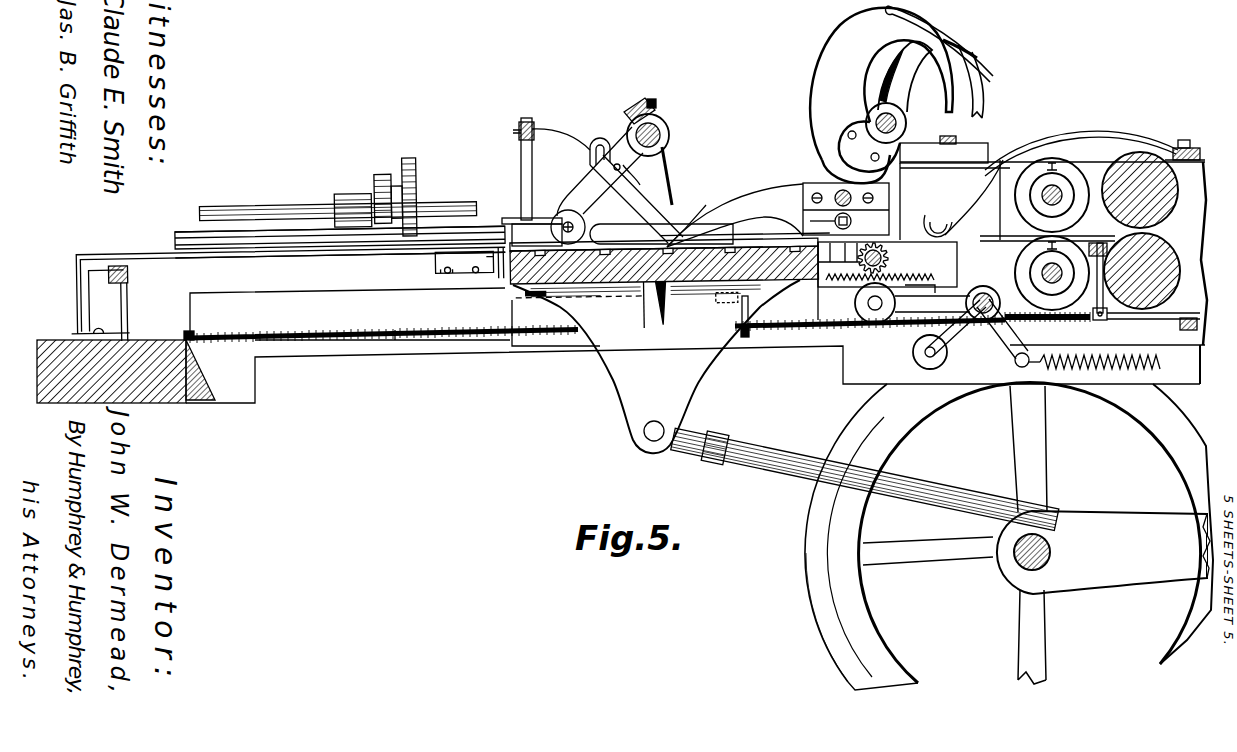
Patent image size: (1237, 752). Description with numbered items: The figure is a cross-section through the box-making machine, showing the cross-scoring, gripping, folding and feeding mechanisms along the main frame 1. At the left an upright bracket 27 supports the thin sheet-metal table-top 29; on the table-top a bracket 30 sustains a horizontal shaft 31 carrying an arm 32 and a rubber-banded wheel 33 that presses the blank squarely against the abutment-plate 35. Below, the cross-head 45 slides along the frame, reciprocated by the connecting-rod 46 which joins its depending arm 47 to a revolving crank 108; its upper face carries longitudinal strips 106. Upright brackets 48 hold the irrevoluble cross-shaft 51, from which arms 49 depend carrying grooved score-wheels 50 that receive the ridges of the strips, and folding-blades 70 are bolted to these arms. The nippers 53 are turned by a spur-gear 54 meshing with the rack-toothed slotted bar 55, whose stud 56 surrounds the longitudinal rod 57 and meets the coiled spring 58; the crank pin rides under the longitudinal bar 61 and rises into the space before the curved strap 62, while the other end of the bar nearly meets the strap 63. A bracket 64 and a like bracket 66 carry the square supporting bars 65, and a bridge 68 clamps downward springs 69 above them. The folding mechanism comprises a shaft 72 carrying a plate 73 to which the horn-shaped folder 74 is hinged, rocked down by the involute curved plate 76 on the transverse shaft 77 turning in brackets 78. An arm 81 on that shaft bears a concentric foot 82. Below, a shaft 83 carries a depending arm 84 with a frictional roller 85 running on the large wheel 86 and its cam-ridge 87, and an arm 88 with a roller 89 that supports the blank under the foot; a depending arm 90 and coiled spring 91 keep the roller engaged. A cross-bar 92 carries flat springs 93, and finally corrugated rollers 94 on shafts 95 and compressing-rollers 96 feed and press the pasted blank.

The main frame 1 is at (621, 345).
The upright bracket 27 is at (420, 276).
The table-top 29 is at (175, 250).
The bracket 30 is at (353, 202).
The horizontal shaft 31 is at (338, 202).
The arm 32 is at (380, 185).
The wheel 33 is at (413, 162).
The abutment-plate 35 is at (176, 232).
The cross-head 45 is at (508, 290).
The connecting-rod 46 is at (865, 479).
The depending arm 47 is at (656, 366).
The upright bracket 48 is at (672, 176).
The arm 49 is at (666, 123).
The score-wheel 50 is at (558, 213).
The cross-shaft 51 is at (663, 135).
The nippers 53 is at (889, 259).
The spur-gear 54 is at (887, 281).
The bar 55 is at (920, 285).
The stud 56 is at (748, 316).
The longitudinal rod 57 is at (395, 332).
The coiled spring 58 is at (858, 343).
The longitudinal bar 61 is at (661, 234).
The curved strap 62 is at (975, 217).
The strap 63 is at (512, 218).
The bracket 64 is at (126, 305).
The square bar 65 is at (227, 259).
The bracket 66 is at (1106, 320).
The bridge 68 is at (521, 153).
The spring 69 is at (560, 133).
The folding-blade 70 is at (673, 209).
The shaft 72 is at (846, 209).
The plate 73 is at (822, 221).
The folder 74 is at (735, 215).
The curved plate 76 is at (881, 96).
The transverse shaft 77 is at (906, 123).
The bracket 78 is at (1052, 188).
The arm 81 is at (905, 77).
The concentric foot 82 is at (973, 38).
The shaft 83 is at (986, 287).
The depending arm 84 is at (956, 328).
The frictional roller 85 is at (916, 352).
The wheel 86 is at (1009, 536).
The cam-ridge 87 is at (810, 584).
The arm 88 is at (992, 307).
The roller 89 is at (855, 304).
The depending arm 90 is at (1024, 354).
The coiled spring 91 is at (1114, 364).
The cross-bar 92 is at (1178, 148).
The flat spring 93 is at (1094, 136).
The corrugated roller 94 is at (1047, 234).
The shaft 95 is at (1052, 283).
The compressing-roller 96 is at (1154, 248).
The strip 106 is at (670, 242).
The crank 108 is at (1103, 552).